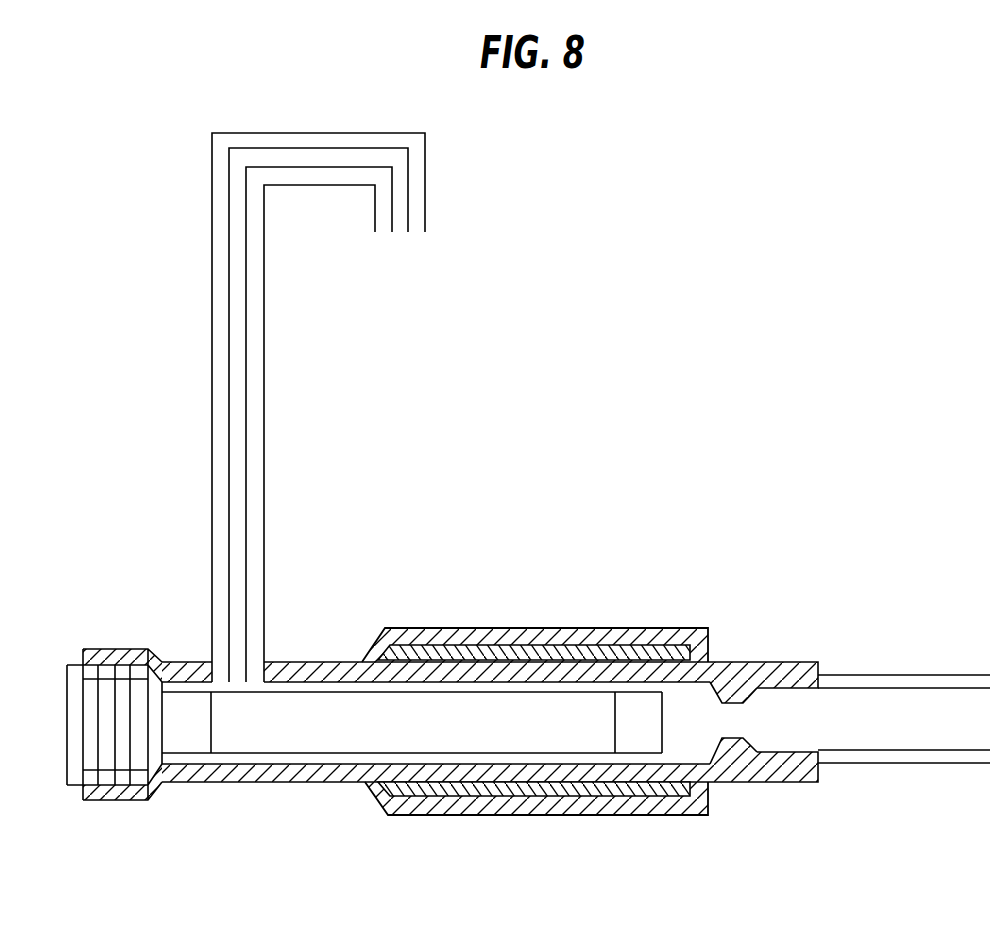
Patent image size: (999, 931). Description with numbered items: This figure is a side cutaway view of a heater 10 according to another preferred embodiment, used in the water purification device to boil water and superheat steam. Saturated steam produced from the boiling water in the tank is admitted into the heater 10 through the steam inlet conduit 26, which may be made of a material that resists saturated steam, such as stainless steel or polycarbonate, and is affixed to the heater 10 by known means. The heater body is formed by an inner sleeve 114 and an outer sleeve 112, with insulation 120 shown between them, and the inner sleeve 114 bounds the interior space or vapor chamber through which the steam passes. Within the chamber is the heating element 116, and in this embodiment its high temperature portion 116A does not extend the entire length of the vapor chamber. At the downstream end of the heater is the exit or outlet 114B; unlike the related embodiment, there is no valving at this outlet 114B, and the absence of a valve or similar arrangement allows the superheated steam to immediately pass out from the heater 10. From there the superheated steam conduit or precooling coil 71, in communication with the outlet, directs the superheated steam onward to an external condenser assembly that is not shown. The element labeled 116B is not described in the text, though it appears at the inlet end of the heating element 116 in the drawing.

The heater 10 is at (765, 395).
The steam inlet conduit 26 is at (400, 240).
The superheated steam conduit or precooling coil 71 is at (885, 715).
The outer sleeve 112 is at (585, 805).
The inner sleeve 114 is at (310, 663).
The exit or outlet 114B is at (730, 723).
The heating element 116 is at (190, 765).
The high temperature portion 116A is at (292, 733).
The nut 116B is at (115, 648).
The insulation 120 is at (475, 790).